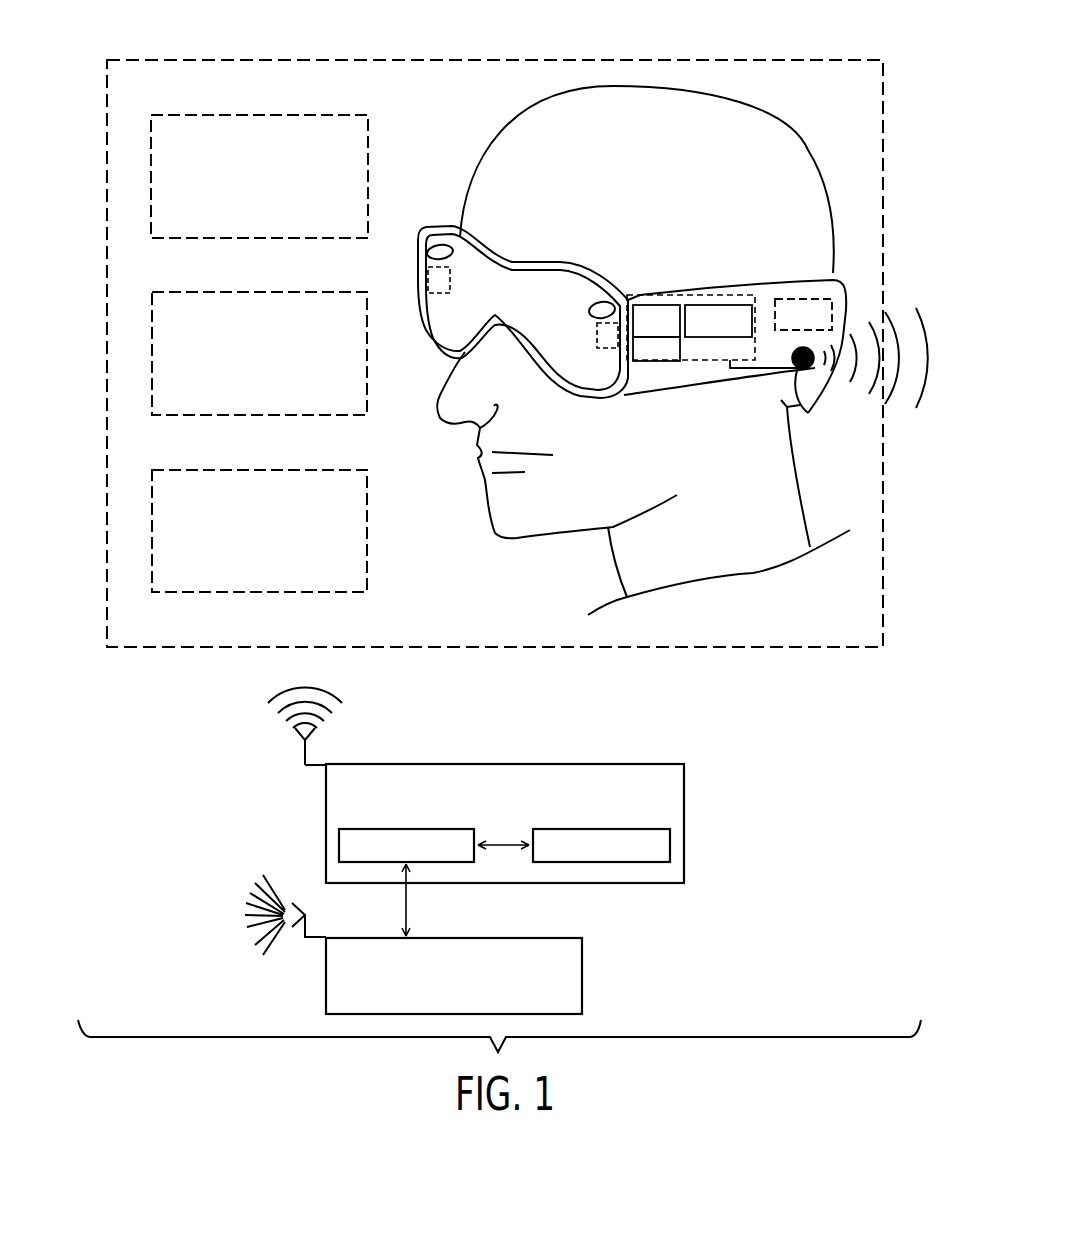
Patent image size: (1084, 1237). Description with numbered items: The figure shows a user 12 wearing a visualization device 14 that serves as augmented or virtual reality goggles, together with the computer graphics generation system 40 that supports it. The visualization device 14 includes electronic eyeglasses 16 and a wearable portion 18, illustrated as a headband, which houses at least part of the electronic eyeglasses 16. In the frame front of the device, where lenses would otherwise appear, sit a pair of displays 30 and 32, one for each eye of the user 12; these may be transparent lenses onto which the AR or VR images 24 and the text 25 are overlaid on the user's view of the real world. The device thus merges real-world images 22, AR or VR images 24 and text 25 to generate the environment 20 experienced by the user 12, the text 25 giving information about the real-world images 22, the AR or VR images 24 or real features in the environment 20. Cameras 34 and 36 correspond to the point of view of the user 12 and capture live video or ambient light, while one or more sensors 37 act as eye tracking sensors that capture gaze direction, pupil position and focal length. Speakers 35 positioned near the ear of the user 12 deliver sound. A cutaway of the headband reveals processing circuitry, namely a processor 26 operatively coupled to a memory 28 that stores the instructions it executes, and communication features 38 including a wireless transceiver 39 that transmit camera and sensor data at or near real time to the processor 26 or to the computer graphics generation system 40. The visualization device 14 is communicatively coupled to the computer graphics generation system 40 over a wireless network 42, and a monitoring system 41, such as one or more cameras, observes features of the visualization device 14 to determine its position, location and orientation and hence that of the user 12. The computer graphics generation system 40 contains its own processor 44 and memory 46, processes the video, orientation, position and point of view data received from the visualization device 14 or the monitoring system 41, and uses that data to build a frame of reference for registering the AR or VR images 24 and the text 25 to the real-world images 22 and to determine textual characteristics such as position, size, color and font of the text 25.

The user 12 is at (815, 161).
The visualization device 14 is at (498, 275).
The electronic eyeglasses 16 is at (440, 302).
The wearable portion 18 is at (767, 336).
The environment 20 is at (641, 59).
The real-world images 22 is at (257, 241).
The AR or VR images 24 is at (257, 418).
The text 25 is at (257, 595).
The processor 26 is at (655, 304).
The memory 28 is at (681, 348).
The display 30 is at (467, 288).
The display 32 is at (553, 313).
The camera 34 is at (420, 251).
The speaker 35 is at (832, 312).
The camera 36 is at (603, 301).
The sensor 37 is at (427, 262).
The communication features 38 is at (718, 304).
The wireless transceiver 39 is at (808, 410).
The computer graphics generation system 40 is at (505, 829).
The monitoring system 41 is at (582, 976).
The wireless network 42 is at (437, 703).
The processor 44 is at (339, 846).
The memory 46 is at (670, 846).